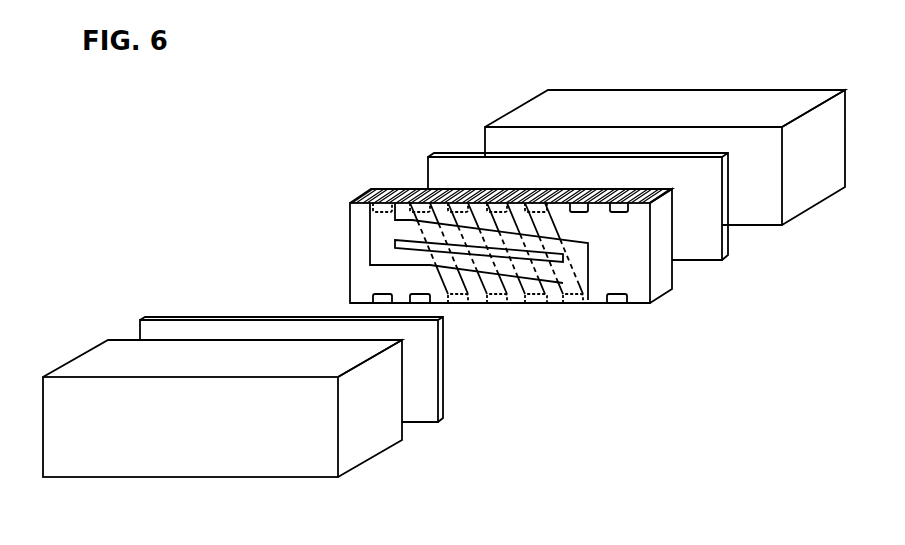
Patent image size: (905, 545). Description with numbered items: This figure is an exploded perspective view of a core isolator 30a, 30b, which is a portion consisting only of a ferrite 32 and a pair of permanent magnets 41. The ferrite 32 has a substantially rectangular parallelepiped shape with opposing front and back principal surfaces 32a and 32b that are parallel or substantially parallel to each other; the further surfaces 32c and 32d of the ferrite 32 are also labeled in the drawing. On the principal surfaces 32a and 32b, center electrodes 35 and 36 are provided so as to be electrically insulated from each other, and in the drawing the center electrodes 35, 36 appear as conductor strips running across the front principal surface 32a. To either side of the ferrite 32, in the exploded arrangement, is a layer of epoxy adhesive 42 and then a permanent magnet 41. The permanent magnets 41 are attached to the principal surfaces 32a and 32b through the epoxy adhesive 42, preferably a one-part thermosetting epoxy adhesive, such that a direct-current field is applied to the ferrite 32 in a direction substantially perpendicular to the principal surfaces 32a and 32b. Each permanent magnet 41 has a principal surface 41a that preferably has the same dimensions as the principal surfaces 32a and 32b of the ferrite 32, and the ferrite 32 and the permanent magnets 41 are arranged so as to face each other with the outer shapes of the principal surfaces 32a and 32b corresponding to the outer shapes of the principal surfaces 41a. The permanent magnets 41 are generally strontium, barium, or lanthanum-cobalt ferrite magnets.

The core isolator 30a is at (447, 264).
The core isolator 30b is at (497, 59).
The ferrite 32 is at (342, 232).
The front principal surface 32a is at (357, 282).
The back principal surface 32b is at (672, 275).
The surface of ferrite 32c is at (378, 188).
The surface of ferrite 32d is at (638, 293).
The center electrode 35 is at (523, 273).
The center electrode 36 is at (503, 217).
The permanent magnet 41 is at (823, 187).
The principal surface of permanent magnet 41a is at (758, 218).
The epoxy adhesive 42 is at (710, 260).